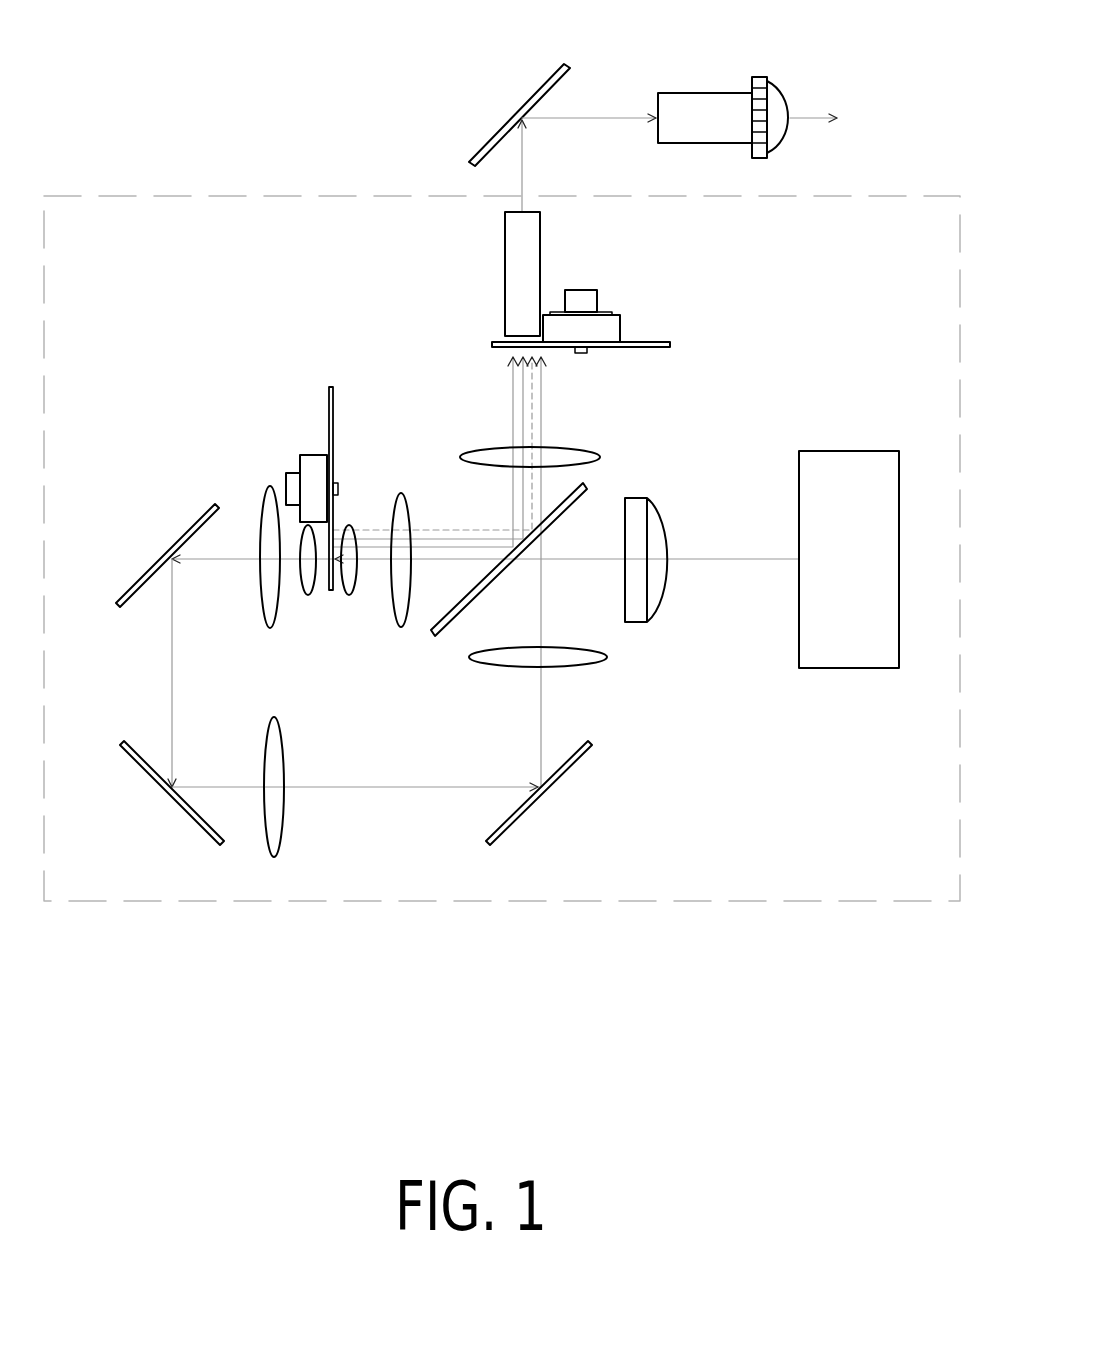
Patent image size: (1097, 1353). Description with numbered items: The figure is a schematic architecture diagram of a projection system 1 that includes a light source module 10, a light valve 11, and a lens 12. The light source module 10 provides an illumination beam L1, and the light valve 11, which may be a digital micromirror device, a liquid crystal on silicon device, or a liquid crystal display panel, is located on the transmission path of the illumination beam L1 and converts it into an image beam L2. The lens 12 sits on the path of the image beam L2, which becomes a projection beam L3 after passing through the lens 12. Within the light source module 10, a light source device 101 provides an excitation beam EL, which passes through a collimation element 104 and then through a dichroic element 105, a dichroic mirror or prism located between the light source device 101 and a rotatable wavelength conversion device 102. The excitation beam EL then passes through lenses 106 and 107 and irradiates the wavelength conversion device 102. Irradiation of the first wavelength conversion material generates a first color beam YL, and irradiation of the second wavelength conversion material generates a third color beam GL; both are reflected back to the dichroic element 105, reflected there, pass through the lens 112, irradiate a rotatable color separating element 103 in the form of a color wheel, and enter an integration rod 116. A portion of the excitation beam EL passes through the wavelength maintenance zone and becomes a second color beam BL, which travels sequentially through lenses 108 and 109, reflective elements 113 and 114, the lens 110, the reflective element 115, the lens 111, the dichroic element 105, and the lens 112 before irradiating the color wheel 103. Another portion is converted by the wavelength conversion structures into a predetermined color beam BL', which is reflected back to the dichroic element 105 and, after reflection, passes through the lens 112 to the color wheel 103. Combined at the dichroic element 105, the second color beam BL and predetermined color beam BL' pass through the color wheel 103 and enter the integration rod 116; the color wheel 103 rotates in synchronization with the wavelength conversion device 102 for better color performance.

The projection system 1 is at (84, 155).
The light source module 10 is at (443, 903).
The light valve 11 is at (540, 85).
The lens 12 is at (705, 93).
The light source device 101 is at (883, 558).
The wavelength conversion device 102 is at (330, 386).
The color separating element 103 is at (660, 345).
The collimation element 104 is at (640, 610).
The dichroic element 105 is at (585, 490).
The lens 106 is at (398, 510).
The lens 107 is at (350, 596).
The lens 108 is at (305, 548).
The lens 109 is at (265, 530).
The lens 110 is at (277, 815).
The lens 111 is at (493, 658).
The lens 112 is at (583, 457).
The reflective element 113 is at (140, 585).
The reflective element 114 is at (143, 771).
The reflective element 115 is at (565, 770).
The integration rod 116 is at (527, 240).
The illumination beam L1 is at (525, 163).
The image beam L2 is at (615, 116).
The projection beam L3 is at (816, 116).
The excitation beam EL is at (750, 562).
The second color beam BL is at (220, 604).
The predetermined color beam BL' is at (445, 478).
The first color beam YL is at (427, 547).
The third color beam GL is at (478, 530).